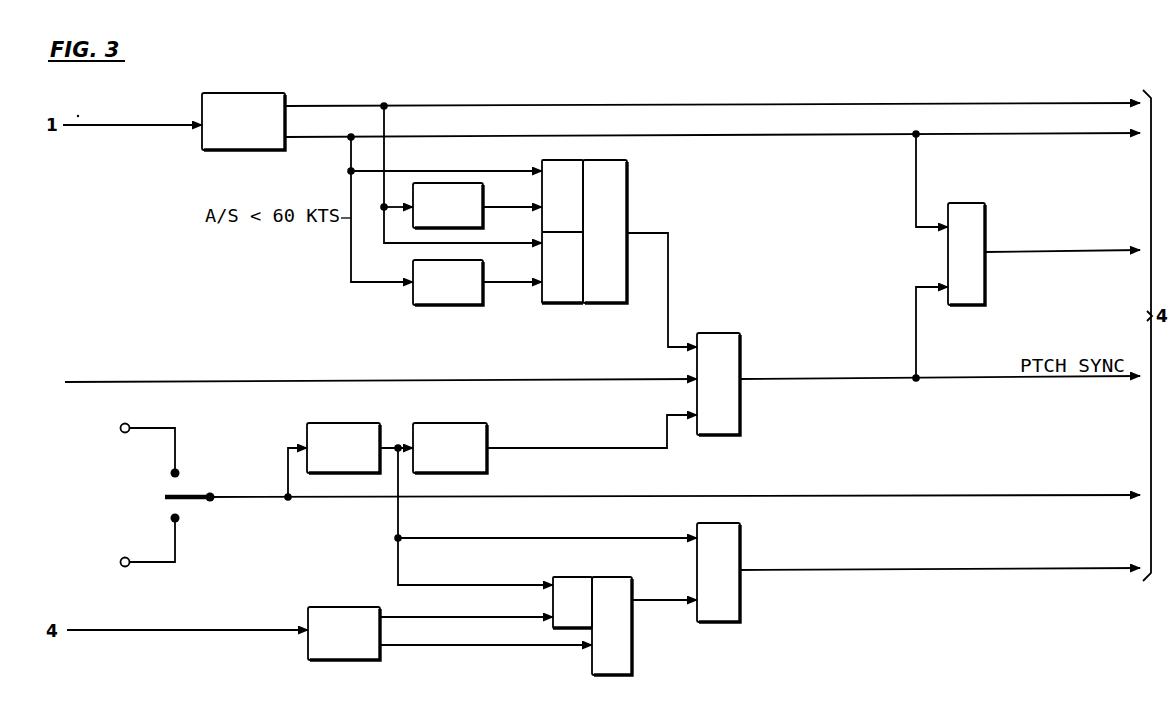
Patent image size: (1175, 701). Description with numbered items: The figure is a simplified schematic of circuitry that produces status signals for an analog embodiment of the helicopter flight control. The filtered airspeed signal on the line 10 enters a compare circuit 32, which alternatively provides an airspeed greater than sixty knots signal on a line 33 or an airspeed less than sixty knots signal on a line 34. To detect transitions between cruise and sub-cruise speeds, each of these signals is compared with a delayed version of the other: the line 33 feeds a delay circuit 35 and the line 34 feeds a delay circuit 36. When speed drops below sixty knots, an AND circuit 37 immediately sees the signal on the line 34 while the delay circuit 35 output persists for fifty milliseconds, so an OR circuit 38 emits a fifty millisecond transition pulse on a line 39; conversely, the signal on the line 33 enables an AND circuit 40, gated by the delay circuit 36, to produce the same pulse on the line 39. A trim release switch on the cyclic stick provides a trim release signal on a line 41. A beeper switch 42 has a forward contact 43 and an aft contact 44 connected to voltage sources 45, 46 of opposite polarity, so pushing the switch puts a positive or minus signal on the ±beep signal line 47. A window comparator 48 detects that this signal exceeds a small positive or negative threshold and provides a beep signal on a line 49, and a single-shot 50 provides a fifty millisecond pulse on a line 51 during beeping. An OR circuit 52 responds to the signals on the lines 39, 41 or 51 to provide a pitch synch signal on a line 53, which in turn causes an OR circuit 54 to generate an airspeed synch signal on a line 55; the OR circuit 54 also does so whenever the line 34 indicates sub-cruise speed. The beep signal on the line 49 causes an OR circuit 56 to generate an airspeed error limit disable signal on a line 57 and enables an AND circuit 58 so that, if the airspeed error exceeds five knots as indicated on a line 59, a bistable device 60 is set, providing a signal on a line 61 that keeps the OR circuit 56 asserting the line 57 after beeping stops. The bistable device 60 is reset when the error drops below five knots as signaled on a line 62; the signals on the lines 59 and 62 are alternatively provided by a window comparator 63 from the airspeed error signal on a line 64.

The filtered airspeed signal line 10 is at (96, 124).
The compare circuit 32 is at (250, 94).
The airspeed greater than 60 knots signal line 33 is at (744, 105).
The airspeed less than 60 knots signal line 34 is at (743, 136).
The delay circuit 35 is at (486, 194).
The delay circuit 36 is at (486, 270).
The AND circuit 37 is at (552, 160).
The OR circuit 38 is at (610, 162).
The airspeed transition signal line 39 is at (668, 262).
The AND circuit 40 is at (555, 303).
The trim release signal line 41 is at (178, 381).
The beeper switch 42 is at (181, 498).
The forward contact 43 is at (180, 471).
The aft contact 44 is at (180, 520).
The voltage source 45 is at (125, 423).
The voltage source 46 is at (125, 567).
The ±beep signal line 47 is at (551, 496).
The window comparator 48 is at (342, 423).
The beep signal line 49 is at (398, 514).
The single-shot 50 is at (450, 423).
The single-shot output line 51 is at (548, 447).
The OR circuit 52 is at (725, 333).
The pitch synch signal line 53 is at (916, 334).
The OR circuit 54 is at (968, 203).
The airspeed synch signal line 55 is at (1064, 256).
The OR circuit 56 is at (730, 523).
The airspeed error limit disable signal line 57 is at (862, 570).
The AND circuit 58 is at (570, 577).
The airspeed error exceeds 5 knots signal line 59 is at (427, 614).
The bistable device 60 is at (632, 620).
The bistable output line 61 is at (648, 600).
The airspeed error below 5 knots signal line 62 is at (427, 644).
The window comparator 63 is at (335, 607).
The airspeed error signal line 64 is at (177, 630).